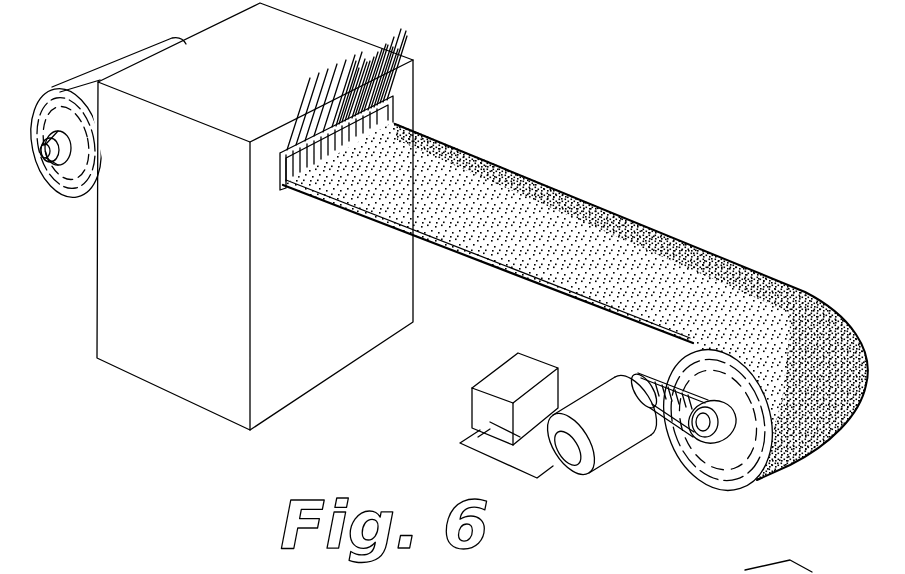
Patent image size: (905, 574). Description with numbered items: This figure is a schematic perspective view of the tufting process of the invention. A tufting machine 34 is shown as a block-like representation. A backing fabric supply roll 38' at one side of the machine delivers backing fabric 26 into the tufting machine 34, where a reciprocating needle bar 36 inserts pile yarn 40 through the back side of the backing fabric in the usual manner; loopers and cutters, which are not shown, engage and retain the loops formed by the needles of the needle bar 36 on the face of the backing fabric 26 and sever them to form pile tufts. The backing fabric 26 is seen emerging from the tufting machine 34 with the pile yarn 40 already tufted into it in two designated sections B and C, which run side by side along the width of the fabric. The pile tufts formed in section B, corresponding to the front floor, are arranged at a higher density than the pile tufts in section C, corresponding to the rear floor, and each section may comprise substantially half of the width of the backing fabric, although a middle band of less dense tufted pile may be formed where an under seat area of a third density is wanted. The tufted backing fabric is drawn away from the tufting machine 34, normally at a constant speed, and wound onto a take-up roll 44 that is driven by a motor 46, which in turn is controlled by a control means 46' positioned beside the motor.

The backing fabric 26 is at (52, 87).
The backing fabric supply roll 38' is at (44, 180).
The tufting machine 34 is at (182, 292).
The reciprocating needle bar 36 is at (388, 116).
The pile yarn 40 is at (297, 113).
The section B (front floor) B is at (571, 228).
The section C (rear floor) C is at (538, 263).
The take-up roll 44 is at (727, 455).
The motor 46 is at (623, 440).
The control means 46' is at (485, 411).